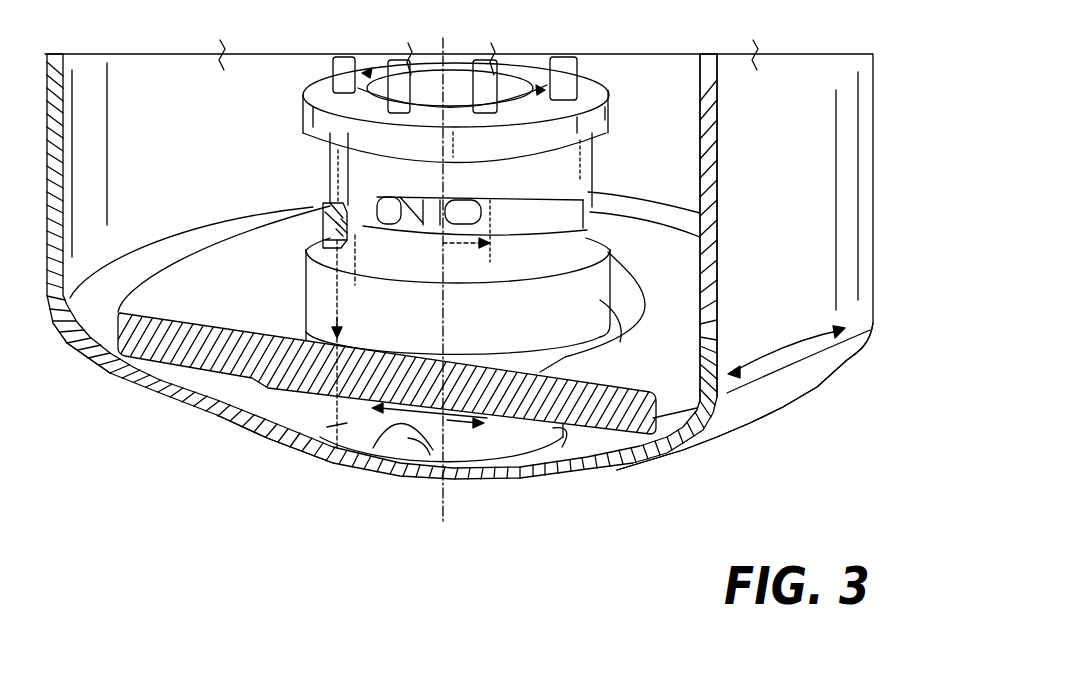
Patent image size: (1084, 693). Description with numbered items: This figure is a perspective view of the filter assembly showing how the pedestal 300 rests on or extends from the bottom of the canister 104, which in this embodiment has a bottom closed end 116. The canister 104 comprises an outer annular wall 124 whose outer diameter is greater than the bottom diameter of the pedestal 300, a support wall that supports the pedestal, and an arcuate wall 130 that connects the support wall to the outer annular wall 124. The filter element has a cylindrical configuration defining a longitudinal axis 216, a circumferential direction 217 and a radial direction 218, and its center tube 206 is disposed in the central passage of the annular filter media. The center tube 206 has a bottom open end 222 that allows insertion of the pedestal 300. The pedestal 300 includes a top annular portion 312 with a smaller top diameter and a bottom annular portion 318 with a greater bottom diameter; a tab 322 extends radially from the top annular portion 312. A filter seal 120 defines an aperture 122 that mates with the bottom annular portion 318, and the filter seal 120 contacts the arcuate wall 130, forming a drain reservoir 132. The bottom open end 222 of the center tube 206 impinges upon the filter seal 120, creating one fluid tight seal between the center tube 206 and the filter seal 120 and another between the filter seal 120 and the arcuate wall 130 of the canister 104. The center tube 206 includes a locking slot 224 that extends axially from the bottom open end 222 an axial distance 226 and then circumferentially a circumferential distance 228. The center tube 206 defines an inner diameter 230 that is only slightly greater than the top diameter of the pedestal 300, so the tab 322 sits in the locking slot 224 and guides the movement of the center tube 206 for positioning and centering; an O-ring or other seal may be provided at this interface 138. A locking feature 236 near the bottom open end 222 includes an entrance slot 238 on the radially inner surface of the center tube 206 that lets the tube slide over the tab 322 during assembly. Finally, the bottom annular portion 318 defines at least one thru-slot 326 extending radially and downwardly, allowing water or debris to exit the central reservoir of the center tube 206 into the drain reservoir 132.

The canister 104 is at (876, 150).
The bottom closed end 116 is at (487, 468).
The filter seal 120 is at (180, 372).
The aperture 122 is at (320, 336).
The outer annular wall 124 is at (710, 244).
The arcuate wall 130 is at (640, 460).
The drain reservoir 132 is at (267, 413).
The interface 138 is at (356, 92).
The center tube 206 is at (614, 104).
The longitudinal axis 216 is at (450, 326).
The circumferential direction 217 is at (788, 357).
The radial direction 218 is at (450, 420).
The bottom open end 222 is at (596, 292).
The locking slot 224 is at (445, 213).
The axial distance 226 is at (335, 225).
The circumferential distance 228 is at (410, 248).
The inner diameter 230 is at (538, 89).
The locking feature 236 is at (490, 212).
The entrance slot 238 is at (358, 300).
The pedestal 300 is at (590, 197).
The top annular portion 312 is at (330, 205).
The bottom annular portion 318 is at (347, 428).
The tab 322 is at (330, 203).
The thru-slot 326 is at (430, 445).